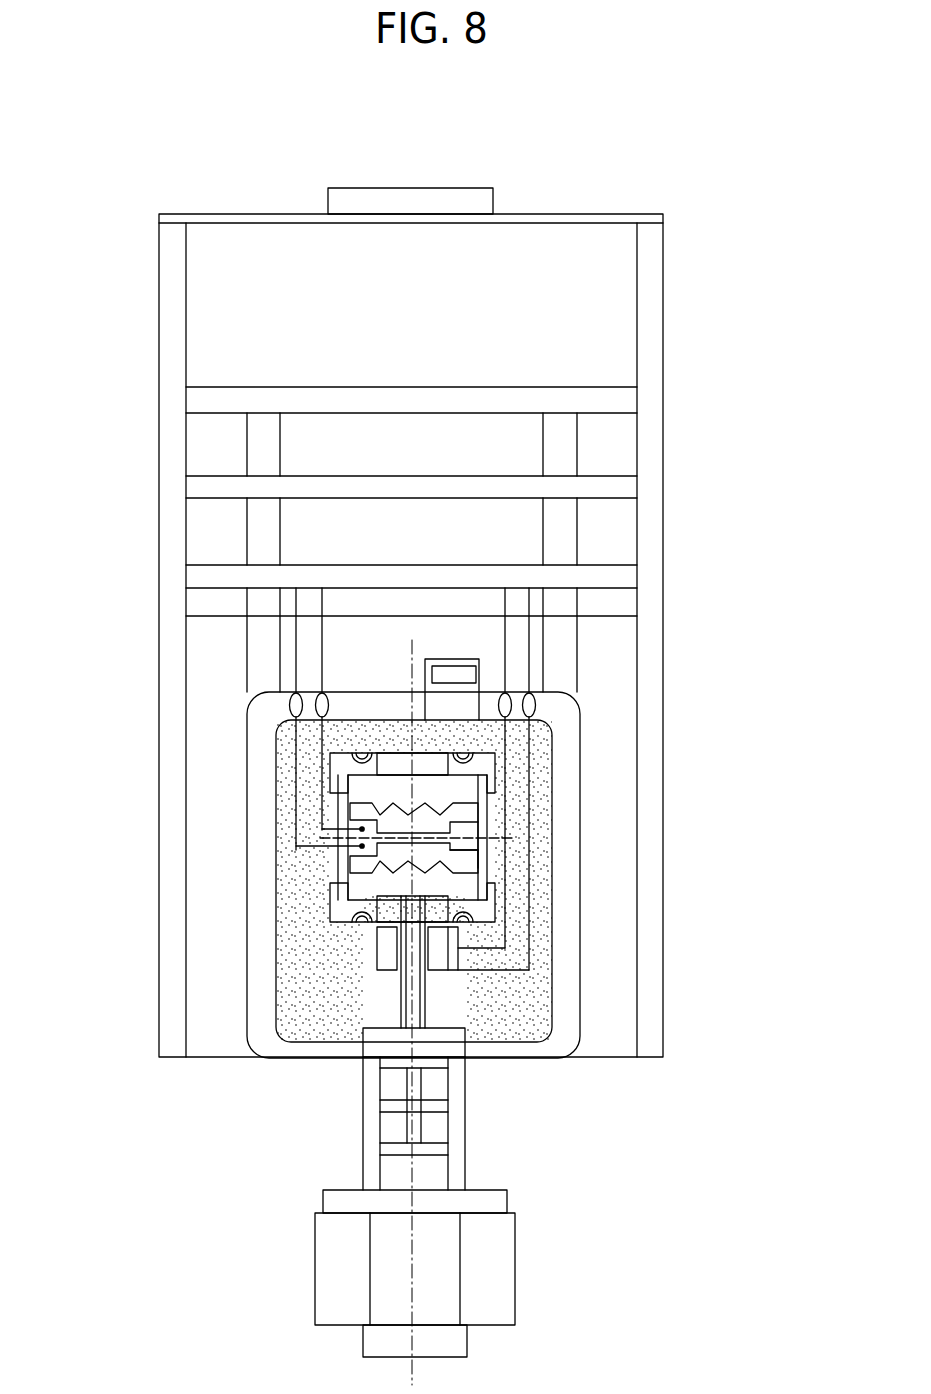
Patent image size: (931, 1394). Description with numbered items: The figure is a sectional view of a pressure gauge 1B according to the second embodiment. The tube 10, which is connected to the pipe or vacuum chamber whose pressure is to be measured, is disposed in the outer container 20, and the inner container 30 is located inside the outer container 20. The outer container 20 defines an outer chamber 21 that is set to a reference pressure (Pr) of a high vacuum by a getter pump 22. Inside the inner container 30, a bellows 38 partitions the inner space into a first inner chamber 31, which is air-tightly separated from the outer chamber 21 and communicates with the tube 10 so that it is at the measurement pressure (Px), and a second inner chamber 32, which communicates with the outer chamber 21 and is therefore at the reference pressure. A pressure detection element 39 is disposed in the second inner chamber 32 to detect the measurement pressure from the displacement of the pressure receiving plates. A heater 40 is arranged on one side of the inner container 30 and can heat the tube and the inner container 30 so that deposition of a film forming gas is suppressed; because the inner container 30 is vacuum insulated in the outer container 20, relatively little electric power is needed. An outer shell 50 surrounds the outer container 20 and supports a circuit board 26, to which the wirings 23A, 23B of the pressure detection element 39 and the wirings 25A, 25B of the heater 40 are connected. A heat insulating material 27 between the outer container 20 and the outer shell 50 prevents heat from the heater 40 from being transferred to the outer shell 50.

The pressure gauge 1B is at (723, 200).
The outer shell 50 is at (663, 430).
The heat insulating material 27 is at (620, 648).
The circuit board 26 is at (368, 560).
The getter pump 22 is at (452, 673).
The wiring of the heater 25B is at (548, 728).
The wiring of the heater 25A is at (545, 760).
The outer chamber 21 is at (297, 872).
The wiring 23A is at (330, 753).
The wiring 23B is at (330, 793).
The second inner chamber 32 is at (447, 812).
The first inner chamber 31 is at (463, 877).
The pressure detection element 39 is at (463, 829).
The bellows 38 is at (377, 853).
The heater 40 is at (465, 966).
The outer container 20 is at (580, 940).
The inner container 30 is at (353, 945).
The tube 10 is at (467, 1343).